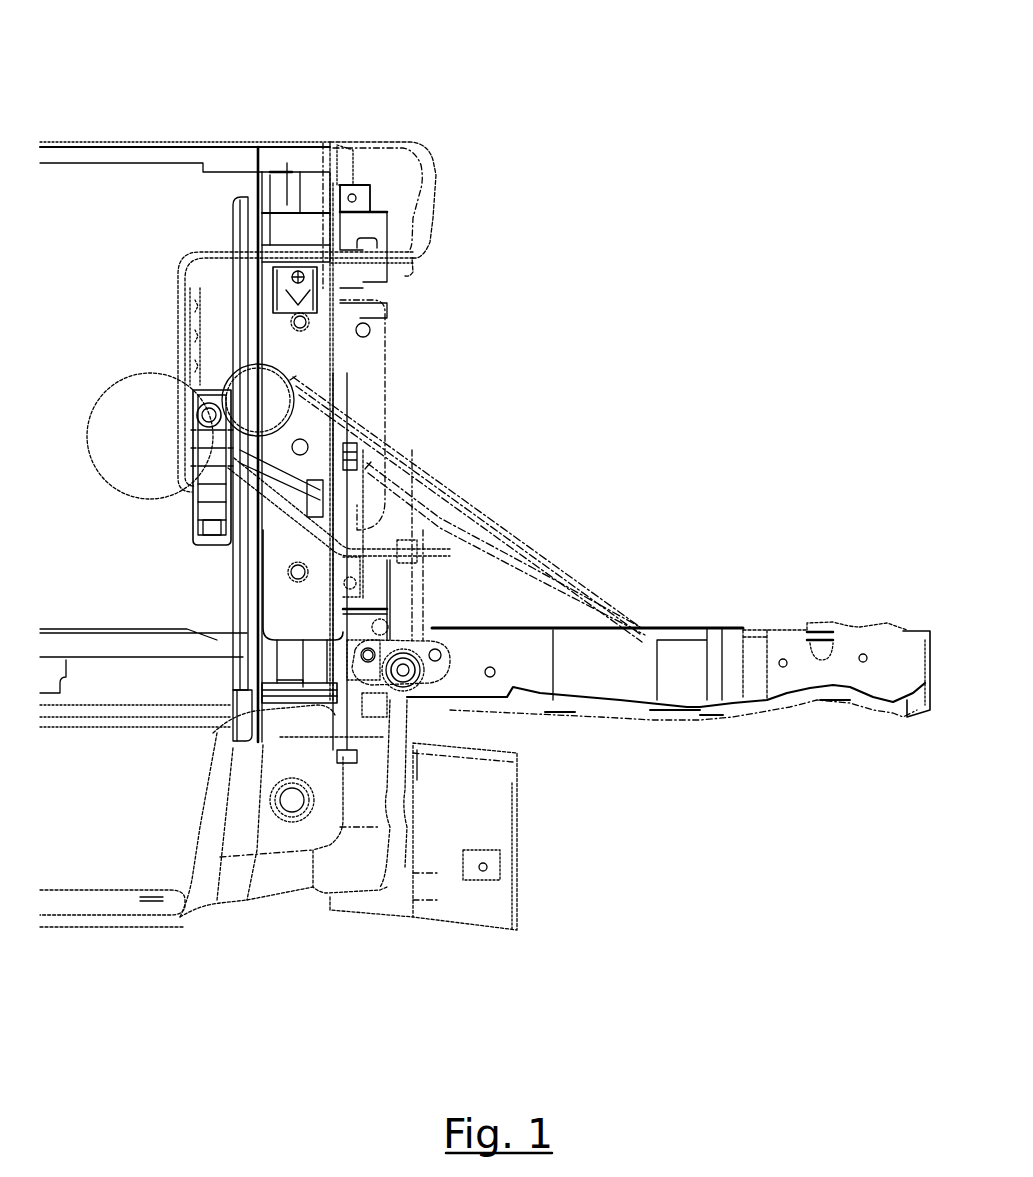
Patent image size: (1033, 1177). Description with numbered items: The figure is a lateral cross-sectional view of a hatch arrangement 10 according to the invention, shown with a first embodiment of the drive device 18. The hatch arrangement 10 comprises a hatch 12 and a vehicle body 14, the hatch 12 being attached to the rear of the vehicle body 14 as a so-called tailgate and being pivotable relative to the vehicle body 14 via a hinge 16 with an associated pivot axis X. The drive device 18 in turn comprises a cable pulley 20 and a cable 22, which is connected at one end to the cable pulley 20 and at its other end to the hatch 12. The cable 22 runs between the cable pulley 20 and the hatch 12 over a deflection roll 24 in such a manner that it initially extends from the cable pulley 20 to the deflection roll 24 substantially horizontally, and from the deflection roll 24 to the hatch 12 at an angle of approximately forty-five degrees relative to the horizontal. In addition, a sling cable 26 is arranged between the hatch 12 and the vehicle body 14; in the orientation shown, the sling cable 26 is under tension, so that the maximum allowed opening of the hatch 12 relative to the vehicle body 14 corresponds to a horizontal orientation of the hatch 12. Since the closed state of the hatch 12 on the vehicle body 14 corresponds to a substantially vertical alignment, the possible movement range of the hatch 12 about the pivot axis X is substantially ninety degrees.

The hatch arrangement 10 is at (598, 89).
The hatch 12 is at (768, 670).
The vehicle body 14 is at (143, 190).
The hinge 16 is at (387, 670).
The drive device 18 is at (160, 516).
The cable pulley 20 is at (120, 434).
The cable 22 is at (450, 487).
The deflection roll 24 is at (272, 388).
The sling cable 26 is at (535, 567).
The pivot axis X is at (405, 672).